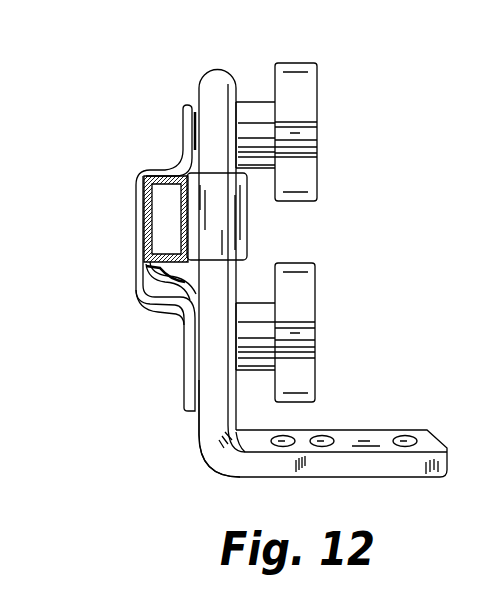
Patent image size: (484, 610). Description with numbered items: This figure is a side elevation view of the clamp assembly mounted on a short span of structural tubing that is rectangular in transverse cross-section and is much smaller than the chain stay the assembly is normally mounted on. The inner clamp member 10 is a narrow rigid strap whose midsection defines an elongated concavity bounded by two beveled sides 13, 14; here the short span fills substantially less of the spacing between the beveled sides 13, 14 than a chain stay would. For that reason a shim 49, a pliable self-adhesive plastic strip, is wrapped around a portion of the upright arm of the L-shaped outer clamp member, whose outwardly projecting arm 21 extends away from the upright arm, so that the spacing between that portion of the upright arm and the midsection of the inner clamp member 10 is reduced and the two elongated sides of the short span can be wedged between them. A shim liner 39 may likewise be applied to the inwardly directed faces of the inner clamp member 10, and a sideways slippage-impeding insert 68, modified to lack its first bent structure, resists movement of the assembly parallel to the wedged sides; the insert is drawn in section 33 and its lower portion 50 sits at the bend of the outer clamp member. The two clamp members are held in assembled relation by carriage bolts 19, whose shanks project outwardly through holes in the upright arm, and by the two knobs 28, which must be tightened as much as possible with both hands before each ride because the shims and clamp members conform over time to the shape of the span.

The inner clamp member 10 is at (120, 197).
The beveled side 13 is at (160, 165).
The beveled side 14 is at (152, 307).
The carriage bolts 19 is at (183, 128).
The outwardly projecting arm 21 is at (353, 437).
The knobs 28 is at (318, 128).
The spring layers 33 is at (148, 280).
The shim liner 39 is at (198, 112).
The shim 49 is at (238, 225).
The lower end portion 50 is at (187, 417).
The hollow hatched member 68 is at (153, 216).